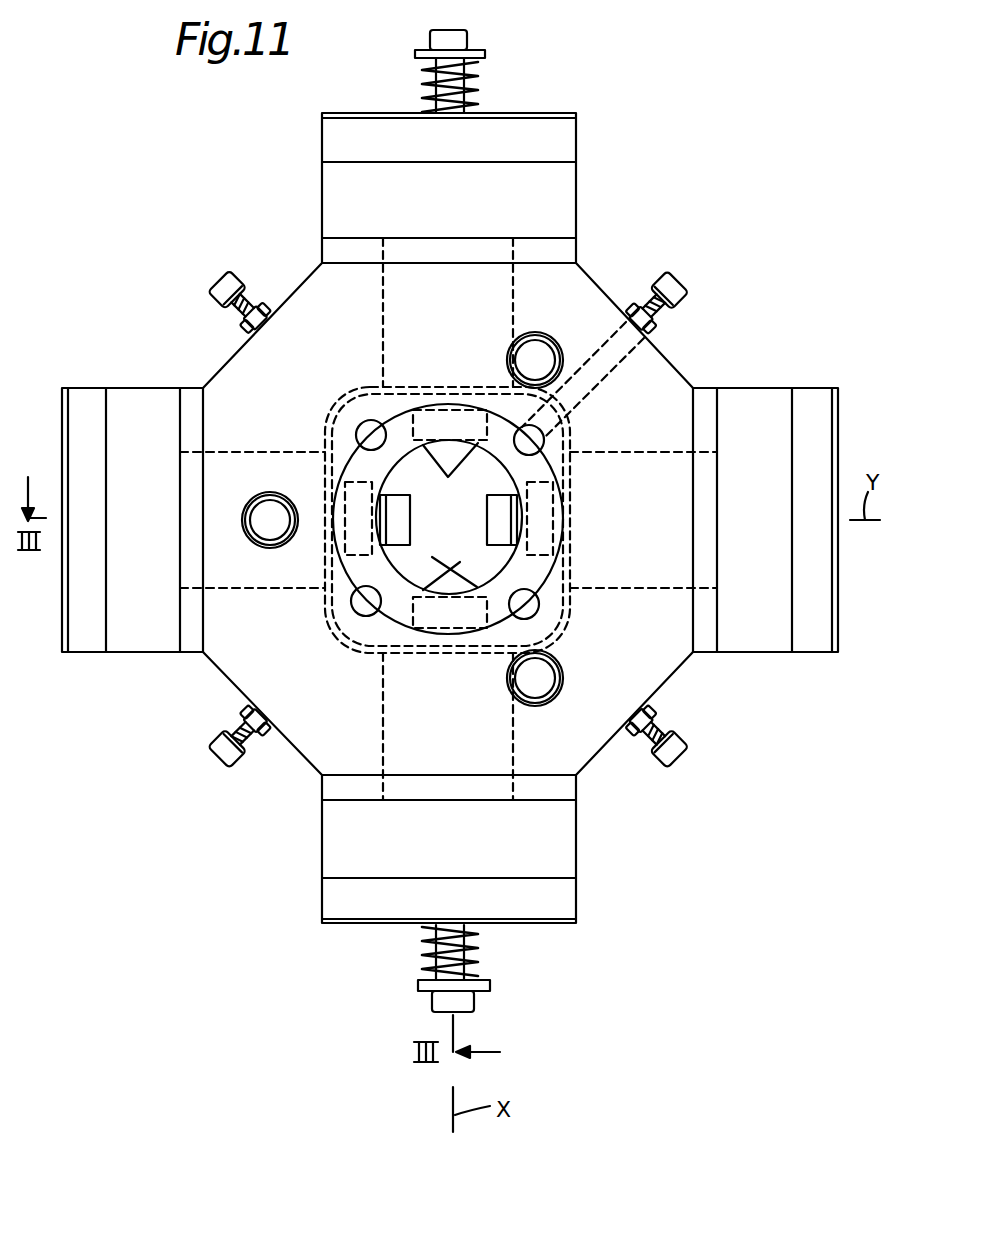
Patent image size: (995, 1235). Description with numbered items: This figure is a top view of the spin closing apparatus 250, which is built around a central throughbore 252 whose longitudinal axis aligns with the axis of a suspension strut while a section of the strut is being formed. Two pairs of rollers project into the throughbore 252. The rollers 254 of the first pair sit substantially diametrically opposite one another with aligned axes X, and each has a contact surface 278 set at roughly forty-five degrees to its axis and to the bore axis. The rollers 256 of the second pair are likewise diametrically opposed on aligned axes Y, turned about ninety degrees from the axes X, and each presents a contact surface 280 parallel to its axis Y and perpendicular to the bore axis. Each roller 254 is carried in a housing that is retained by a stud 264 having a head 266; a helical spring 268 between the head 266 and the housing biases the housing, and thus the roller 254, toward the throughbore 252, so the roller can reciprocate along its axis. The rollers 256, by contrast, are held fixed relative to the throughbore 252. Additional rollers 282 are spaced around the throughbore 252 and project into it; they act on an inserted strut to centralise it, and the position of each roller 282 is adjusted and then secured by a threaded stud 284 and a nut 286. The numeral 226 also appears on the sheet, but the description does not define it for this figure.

The screw head 226 is at (457, 40).
The spin closing apparatus 250 is at (630, 199).
The throughbore 252 is at (478, 510).
The rollers of the first pair 254 is at (448, 405).
The rollers of the second pair 256 is at (555, 512).
The stud 264 is at (443, 72).
The head 266 is at (460, 1000).
The helical spring 268 is at (477, 88).
The contact surface 278 is at (447, 516).
The contact surface 280 is at (400, 517).
The additional rollers 282 is at (565, 432).
The threaded stud 284 is at (670, 318).
The nut 286 is at (633, 300).